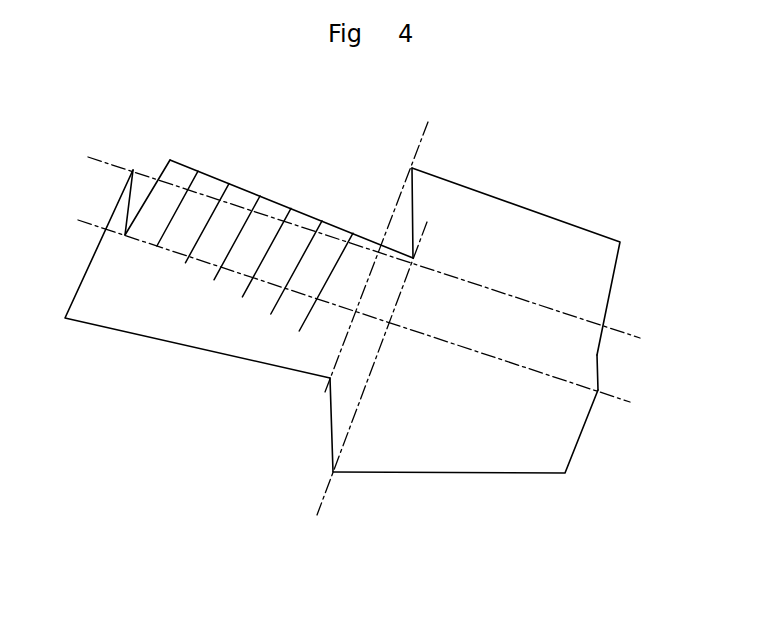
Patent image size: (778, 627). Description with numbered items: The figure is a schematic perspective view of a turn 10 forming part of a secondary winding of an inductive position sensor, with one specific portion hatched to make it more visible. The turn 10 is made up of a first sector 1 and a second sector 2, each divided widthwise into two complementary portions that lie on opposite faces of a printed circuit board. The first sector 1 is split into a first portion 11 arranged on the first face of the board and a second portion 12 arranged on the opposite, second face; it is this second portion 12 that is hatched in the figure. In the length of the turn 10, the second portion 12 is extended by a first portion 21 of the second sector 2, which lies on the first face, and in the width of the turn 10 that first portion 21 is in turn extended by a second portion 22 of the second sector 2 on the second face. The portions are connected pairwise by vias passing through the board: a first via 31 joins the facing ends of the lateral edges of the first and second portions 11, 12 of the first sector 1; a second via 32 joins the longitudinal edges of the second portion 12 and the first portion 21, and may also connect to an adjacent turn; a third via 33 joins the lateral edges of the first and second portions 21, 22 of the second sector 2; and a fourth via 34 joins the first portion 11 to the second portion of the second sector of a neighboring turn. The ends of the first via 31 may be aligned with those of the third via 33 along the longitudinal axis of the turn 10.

The first sector 1 is at (303, 211).
The second sector 2 is at (490, 477).
The turn 10 is at (328, 384).
The first portion of the first sector 11 is at (138, 313).
The second portion of the first sector 12 is at (255, 238).
The first portion of the second sector 21 is at (517, 253).
The second portion of the second sector 22 is at (530, 435).
The first via 31 is at (127, 200).
The second via 32 is at (413, 197).
The third via 33 is at (596, 358).
The fourth via 34 is at (333, 440).